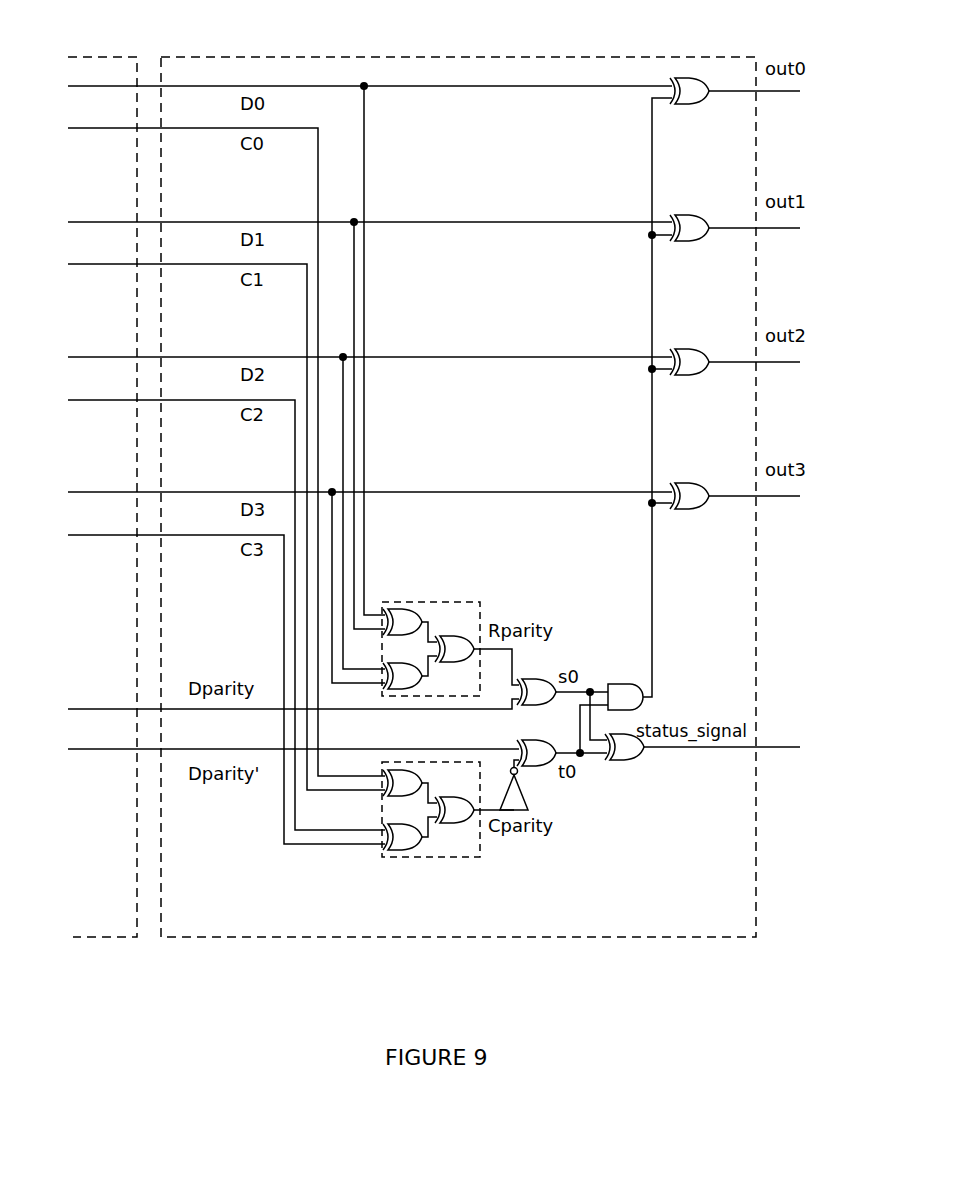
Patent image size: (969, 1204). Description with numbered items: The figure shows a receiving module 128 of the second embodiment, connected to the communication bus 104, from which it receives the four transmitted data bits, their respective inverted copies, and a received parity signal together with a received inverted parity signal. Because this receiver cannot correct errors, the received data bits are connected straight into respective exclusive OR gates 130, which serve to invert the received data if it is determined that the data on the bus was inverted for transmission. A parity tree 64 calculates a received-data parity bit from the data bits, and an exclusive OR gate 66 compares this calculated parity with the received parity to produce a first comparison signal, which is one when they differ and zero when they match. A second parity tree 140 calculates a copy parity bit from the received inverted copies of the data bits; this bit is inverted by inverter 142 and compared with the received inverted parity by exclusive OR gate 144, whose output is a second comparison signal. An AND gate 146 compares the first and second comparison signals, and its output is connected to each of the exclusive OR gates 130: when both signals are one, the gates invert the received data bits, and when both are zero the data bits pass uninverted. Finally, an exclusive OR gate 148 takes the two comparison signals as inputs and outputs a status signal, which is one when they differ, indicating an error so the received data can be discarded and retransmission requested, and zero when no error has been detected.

The communication bus 104 is at (117, 938).
The receiving module 128 is at (305, 938).
The exclusive OR gates 130 is at (685, 78).
The parity tree 64 is at (480, 602).
The exclusive OR gate 66 is at (560, 668).
The AND gate 146 is at (635, 711).
The exclusive OR gate 148 is at (628, 758).
The second parity tree 140 is at (392, 858).
The inverter 142 is at (530, 782).
The exclusive OR gate 144 is at (556, 762).